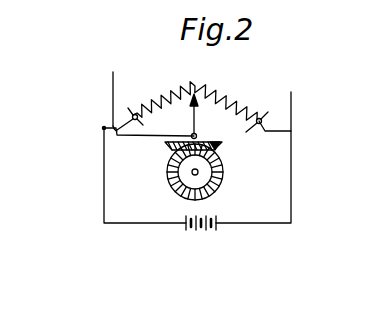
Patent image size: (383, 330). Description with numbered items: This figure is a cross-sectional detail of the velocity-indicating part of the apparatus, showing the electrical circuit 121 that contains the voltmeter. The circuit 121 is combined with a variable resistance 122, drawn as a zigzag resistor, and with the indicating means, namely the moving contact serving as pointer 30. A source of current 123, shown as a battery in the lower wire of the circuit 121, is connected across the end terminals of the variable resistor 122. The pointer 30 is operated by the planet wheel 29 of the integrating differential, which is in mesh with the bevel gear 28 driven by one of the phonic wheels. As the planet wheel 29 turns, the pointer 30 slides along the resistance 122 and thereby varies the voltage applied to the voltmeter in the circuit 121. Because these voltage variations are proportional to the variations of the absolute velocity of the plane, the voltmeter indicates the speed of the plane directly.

The circuit 121 is at (112, 97).
The variable resistance 122 is at (156, 94).
The indicating means 30 is at (196, 110).
The planet wheel 29 is at (215, 144).
The bevel gear 28 is at (215, 192).
The source of current 123 is at (208, 232).